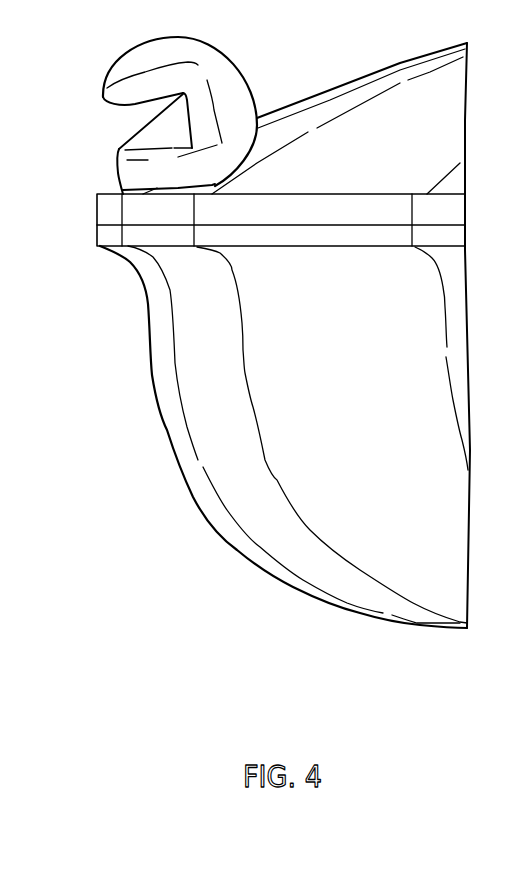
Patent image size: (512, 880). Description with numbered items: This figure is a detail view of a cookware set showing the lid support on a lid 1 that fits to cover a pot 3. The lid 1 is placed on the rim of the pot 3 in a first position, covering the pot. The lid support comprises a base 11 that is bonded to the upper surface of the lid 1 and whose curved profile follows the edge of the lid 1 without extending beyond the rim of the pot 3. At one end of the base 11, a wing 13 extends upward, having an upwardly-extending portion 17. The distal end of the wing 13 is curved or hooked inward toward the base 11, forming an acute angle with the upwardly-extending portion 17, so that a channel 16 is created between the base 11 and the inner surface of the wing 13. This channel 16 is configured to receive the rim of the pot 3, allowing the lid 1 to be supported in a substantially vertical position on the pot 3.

The lid 1 is at (428, 66).
The pot 3 is at (165, 367).
The base 11 is at (123, 168).
The wing 13 is at (133, 77).
The channel 16 is at (150, 118).
The upwardly-extending portion 17 is at (222, 93).